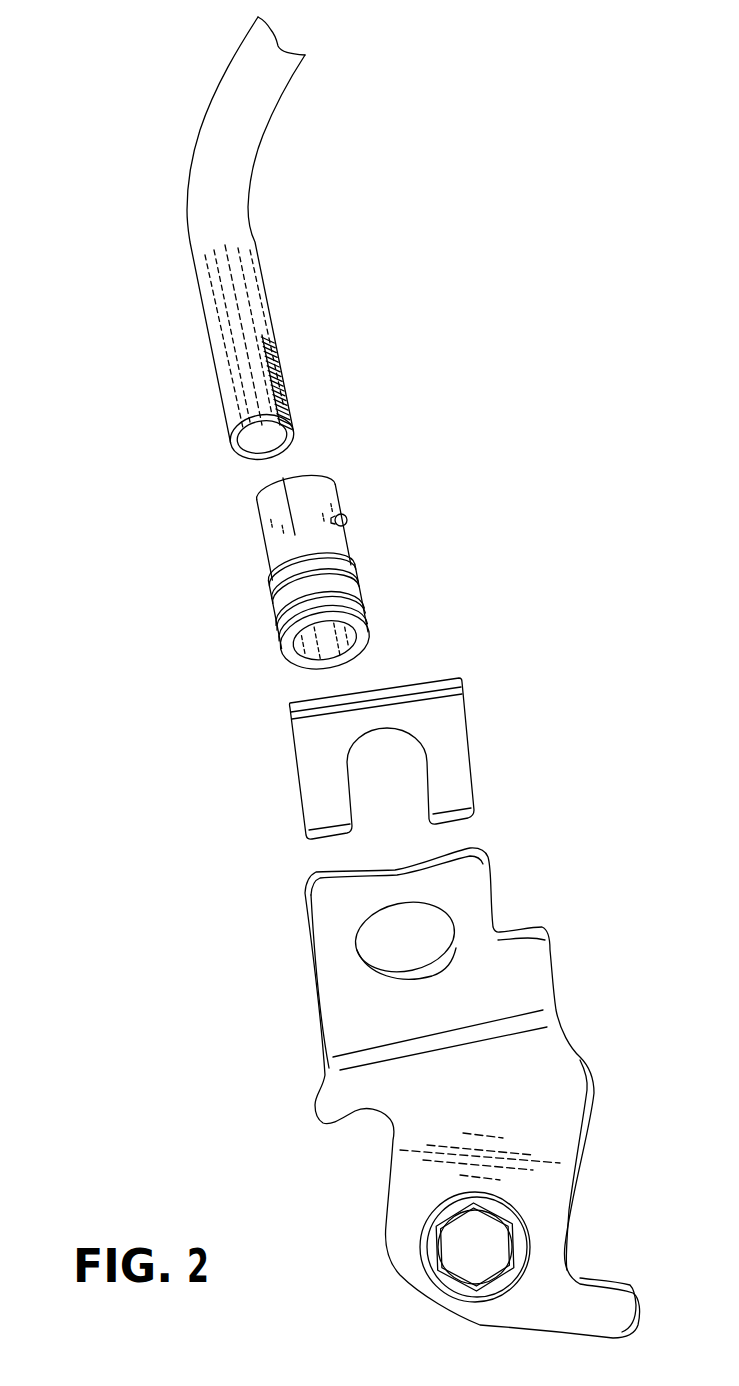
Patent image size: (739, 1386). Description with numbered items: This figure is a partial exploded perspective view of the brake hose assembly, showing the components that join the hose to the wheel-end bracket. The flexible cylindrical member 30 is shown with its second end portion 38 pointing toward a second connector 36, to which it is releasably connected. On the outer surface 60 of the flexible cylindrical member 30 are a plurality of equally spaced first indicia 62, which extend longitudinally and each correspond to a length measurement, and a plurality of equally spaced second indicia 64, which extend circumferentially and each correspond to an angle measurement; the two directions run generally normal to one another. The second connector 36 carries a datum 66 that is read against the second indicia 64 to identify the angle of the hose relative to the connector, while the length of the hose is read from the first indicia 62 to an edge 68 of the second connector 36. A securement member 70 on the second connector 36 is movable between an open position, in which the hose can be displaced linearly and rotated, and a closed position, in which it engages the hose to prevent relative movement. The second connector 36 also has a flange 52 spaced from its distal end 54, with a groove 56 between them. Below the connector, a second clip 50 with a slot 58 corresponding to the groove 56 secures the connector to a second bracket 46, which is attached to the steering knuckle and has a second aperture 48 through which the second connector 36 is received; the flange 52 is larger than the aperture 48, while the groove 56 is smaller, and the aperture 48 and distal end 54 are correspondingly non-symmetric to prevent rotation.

The flexible cylindrical member 30 is at (273, 104).
The outer surface 60 is at (237, 148).
The plurality of equally spaced second indicia 64 is at (225, 245).
The plurality of equally spaced first indicia 62 is at (282, 390).
The second end portion 38 is at (203, 412).
The second connector 36 is at (390, 600).
The datum 66 is at (295, 508).
The securement member 70 is at (370, 525).
The edge 68 is at (260, 497).
The flange 52 is at (270, 577).
The groove 56 is at (276, 630).
The distal end 54 is at (278, 645).
The second clip 50 is at (473, 758).
The slot 58 is at (376, 789).
The second bracket 46 is at (520, 973).
The second aperture 48 is at (456, 928).